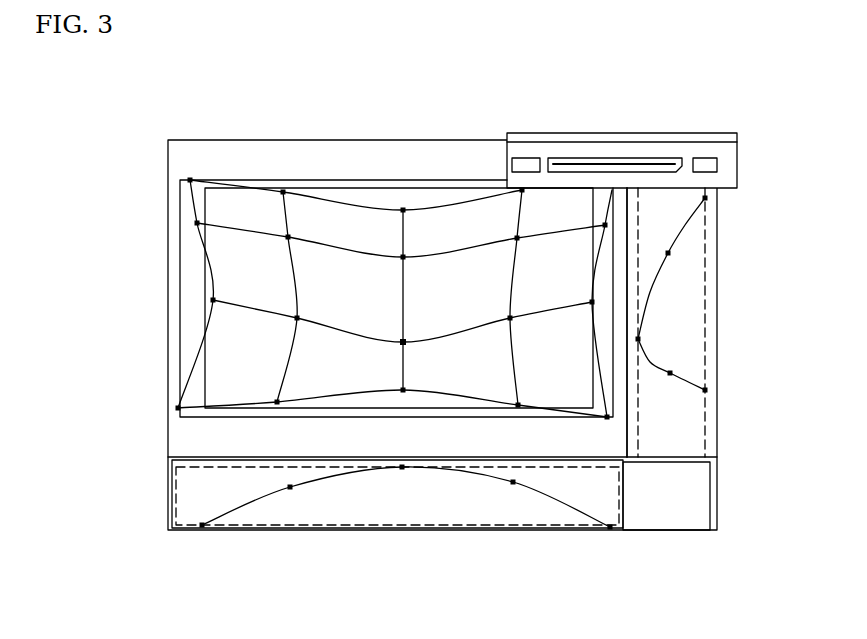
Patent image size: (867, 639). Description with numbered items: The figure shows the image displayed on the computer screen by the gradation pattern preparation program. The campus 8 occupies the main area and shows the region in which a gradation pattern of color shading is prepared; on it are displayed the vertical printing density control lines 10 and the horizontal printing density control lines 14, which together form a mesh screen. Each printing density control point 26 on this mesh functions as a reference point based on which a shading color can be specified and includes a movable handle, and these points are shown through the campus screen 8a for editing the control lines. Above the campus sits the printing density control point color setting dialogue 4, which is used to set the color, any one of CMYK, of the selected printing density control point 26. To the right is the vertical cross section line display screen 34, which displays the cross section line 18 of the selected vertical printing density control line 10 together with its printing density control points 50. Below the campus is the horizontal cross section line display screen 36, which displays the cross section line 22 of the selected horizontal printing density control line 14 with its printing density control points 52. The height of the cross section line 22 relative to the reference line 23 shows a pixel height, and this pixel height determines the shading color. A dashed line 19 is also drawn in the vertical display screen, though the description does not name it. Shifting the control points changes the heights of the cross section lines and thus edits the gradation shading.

The printing density control point color setting dialogue 4 is at (737, 170).
The campus 8 is at (263, 180).
The campus screen 8a is at (236, 355).
The vertical printing density control line 10 is at (293, 275).
The horizontal printing density control line 14 is at (317, 243).
The cross section line of the vertical printing density control line 18 is at (685, 225).
The dashed guide line 19 is at (705, 410).
The cross section line of the horizontal printing density control line 22 is at (562, 497).
The reference line 23 is at (450, 530).
The printing density control point 26 is at (403, 342).
The vertical cross section line display screen 34 is at (687, 437).
The horizontal cross section line display screen 36 is at (247, 518).
The printing density control point 50 is at (668, 253).
The printing density control point 52 is at (288, 488).